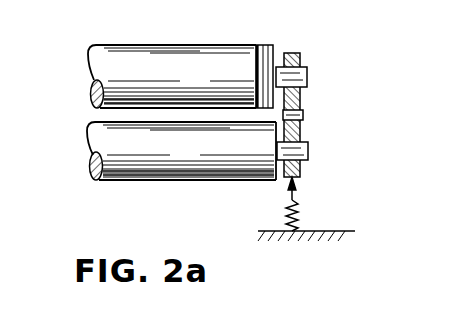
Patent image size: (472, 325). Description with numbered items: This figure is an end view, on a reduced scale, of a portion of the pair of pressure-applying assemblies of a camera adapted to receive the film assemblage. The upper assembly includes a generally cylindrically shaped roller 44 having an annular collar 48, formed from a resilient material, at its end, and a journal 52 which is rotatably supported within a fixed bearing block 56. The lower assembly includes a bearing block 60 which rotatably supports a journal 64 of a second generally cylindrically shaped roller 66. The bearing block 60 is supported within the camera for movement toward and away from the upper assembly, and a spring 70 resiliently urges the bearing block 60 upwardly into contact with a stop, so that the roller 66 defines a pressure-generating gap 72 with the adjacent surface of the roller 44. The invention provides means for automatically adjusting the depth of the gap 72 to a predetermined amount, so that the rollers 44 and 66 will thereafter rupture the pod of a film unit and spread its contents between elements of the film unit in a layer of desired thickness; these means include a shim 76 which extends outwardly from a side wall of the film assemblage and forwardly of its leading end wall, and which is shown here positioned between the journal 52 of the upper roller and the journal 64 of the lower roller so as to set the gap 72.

The roller 44 is at (155, 55).
The annular collar 48 is at (258, 48).
The journal 52 is at (307, 77).
The bearing block 56 is at (300, 60).
The bearing block 60 is at (298, 180).
The journal 64 is at (308, 150).
The roller 66 is at (200, 180).
The spring 70 is at (288, 208).
The pressure-generating gap 72 is at (88, 113).
The shim 76 is at (303, 115).